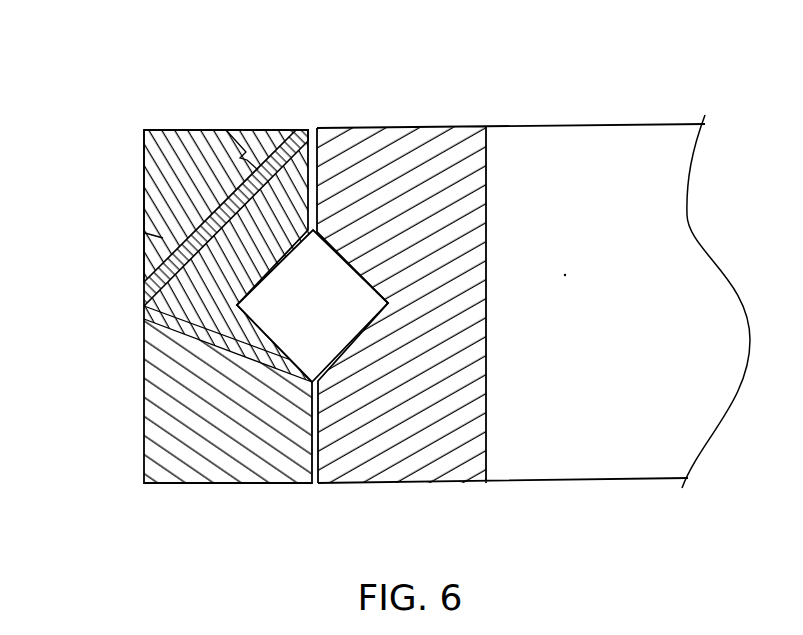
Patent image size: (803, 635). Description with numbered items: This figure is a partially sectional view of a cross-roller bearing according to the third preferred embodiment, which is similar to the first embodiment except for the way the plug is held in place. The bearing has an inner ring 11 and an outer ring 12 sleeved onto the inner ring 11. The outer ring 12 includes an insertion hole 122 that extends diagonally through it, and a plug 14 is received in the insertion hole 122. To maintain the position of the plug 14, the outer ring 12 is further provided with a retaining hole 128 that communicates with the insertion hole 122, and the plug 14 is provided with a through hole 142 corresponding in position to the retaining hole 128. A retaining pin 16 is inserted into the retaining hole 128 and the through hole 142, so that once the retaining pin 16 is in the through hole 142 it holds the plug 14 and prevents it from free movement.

The inner ring 11 is at (447, 128).
The outer ring 12 is at (262, 130).
The insertion hole 122 is at (250, 281).
The retaining hole 128 is at (300, 134).
The plug 14 is at (171, 145).
The through hole 142 is at (250, 150).
The retaining pin 16 is at (150, 283).